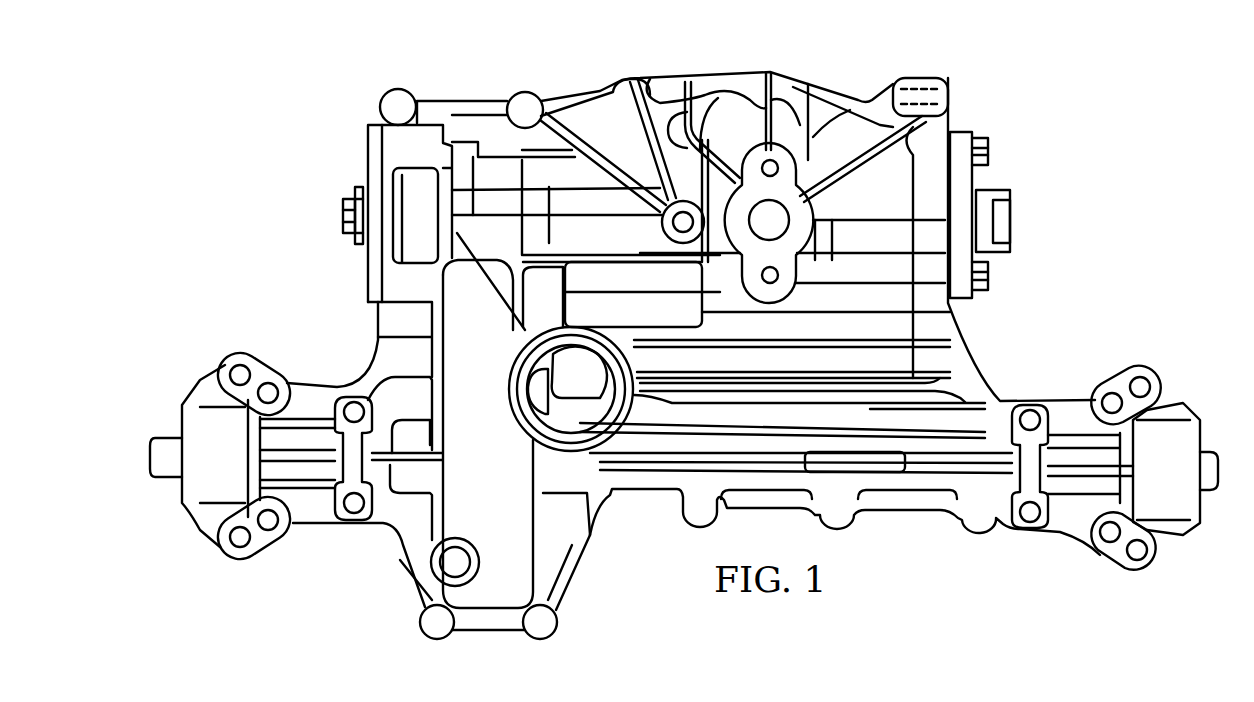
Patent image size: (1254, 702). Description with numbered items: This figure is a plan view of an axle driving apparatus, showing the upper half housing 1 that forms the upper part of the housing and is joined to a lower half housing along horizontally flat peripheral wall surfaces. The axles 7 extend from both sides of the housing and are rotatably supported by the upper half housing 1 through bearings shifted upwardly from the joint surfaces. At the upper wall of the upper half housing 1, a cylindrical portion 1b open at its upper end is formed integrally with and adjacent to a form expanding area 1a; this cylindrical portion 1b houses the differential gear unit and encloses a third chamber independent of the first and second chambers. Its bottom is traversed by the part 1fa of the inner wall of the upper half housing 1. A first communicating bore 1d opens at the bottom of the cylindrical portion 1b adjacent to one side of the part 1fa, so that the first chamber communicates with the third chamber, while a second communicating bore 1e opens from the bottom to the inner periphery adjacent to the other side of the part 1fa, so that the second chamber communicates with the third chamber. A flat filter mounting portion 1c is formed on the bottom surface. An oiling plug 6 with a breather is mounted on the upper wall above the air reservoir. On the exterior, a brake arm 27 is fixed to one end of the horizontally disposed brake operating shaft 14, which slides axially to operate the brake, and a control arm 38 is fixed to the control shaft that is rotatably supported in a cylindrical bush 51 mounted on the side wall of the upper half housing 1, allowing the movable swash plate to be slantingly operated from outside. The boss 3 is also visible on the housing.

The upper half housing 1 is at (691, 339).
The form expanding area 1a is at (527, 570).
The cylindrical portion 1b is at (553, 350).
The filter mounting portion 1c is at (553, 418).
The first communicating bore 1d is at (565, 375).
The second communicating bore 1e is at (545, 400).
The part of inner wall 1fa is at (562, 362).
The boss 3 is at (777, 215).
The oiling plug 6 is at (405, 580).
The axles 7 is at (168, 440).
The brake operating shaft 14 is at (352, 214).
The brake arm 27 is at (355, 190).
The control arm 38 is at (1004, 190).
The cylindrical bush 51 is at (958, 137).